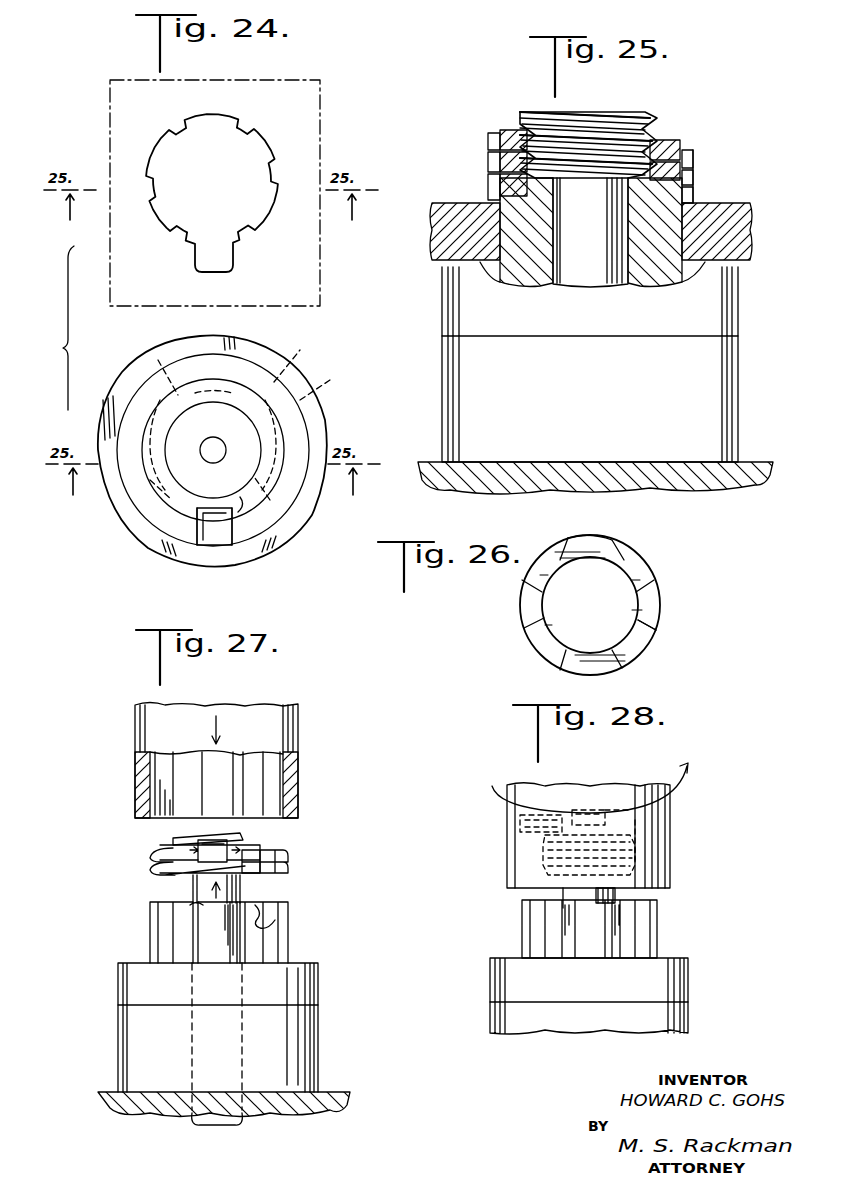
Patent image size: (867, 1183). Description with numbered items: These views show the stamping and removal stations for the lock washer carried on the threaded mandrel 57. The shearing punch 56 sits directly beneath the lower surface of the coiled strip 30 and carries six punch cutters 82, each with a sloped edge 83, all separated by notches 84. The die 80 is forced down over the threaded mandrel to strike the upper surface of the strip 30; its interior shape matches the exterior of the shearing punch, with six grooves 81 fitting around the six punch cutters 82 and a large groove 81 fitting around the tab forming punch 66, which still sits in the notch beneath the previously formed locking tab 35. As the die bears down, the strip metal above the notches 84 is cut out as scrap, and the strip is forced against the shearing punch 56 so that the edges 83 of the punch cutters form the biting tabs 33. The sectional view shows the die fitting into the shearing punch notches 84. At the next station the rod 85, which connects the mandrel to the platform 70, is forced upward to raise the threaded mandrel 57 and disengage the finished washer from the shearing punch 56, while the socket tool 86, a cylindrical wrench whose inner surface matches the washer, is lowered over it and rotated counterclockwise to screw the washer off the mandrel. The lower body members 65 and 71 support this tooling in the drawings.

In FIG. 24, the coiled strip 30 is at (250, 505).
In FIG. 25, the coiled strip 30 is at (670, 138).
In FIG. 28, the coiled strip 30 is at (670, 818).
In FIG. 25, the biting tabs 33 is at (695, 160).
In FIG. 27, the biting tabs 33 is at (262, 882).
In FIG. 24, the locking tab 35 is at (205, 532).
In FIG. 27, the locking tab 35 is at (226, 853).
In FIG. 28, the locking tab 35 is at (585, 810).
In FIG. 24, the shearing punch 56 is at (268, 382).
In FIG. 25, the shearing punch 56 is at (684, 190).
In FIG. 28, the shearing punch 56 is at (660, 942).
In FIG. 24, the threaded mandrel 57 is at (180, 473).
In FIG. 25, the threaded mandrel 57 is at (578, 115).
In FIG. 27, the threaded mandrel 57 is at (170, 836).
In FIG. 28, the threaded mandrel 57 is at (668, 854).
In FIG. 25, the die holder block 65 is at (591, 403).
In FIG. 27, the die holder block 65 is at (122, 1035).
In FIG. 28, the die holder block 65 is at (593, 1032).
In FIG. 24, the tab forming punch 66 is at (216, 540).
In FIG. 27, the tab forming punch 66 is at (218, 948).
In FIG. 25, the platform 70 is at (752, 460).
In FIG. 27, the platform 70 is at (114, 1094).
In FIG. 25, the die retainer 71 is at (592, 317).
In FIG. 27, the die retainer 71 is at (120, 975).
In FIG. 28, the die retainer 71 is at (597, 995).
In FIG. 24, the die 80 is at (296, 90).
In FIG. 25, the die 80 is at (480, 198).
In FIG. 24, the grooves 81 is at (230, 147).
In FIG. 24, the punch cutters 82 is at (148, 382).
In FIG. 26, the punch cutters 82 is at (640, 562).
In FIG. 27, the punch cutters 82 is at (270, 906).
In FIG. 26, the sloped edge 83 is at (616, 548).
In FIG. 27, the sloped edge 83 is at (283, 914).
In FIG. 24, the notches 84 is at (300, 412).
In FIG. 25, the notches 84 is at (487, 148).
In FIG. 26, the notches 84 is at (653, 622).
In FIG. 27, the rod 85 is at (192, 881).
In FIG. 28, the rod 85 is at (617, 896).
In FIG. 27, the socket tool 86 is at (134, 720).
In FIG. 28, the socket tool 86 is at (668, 840).